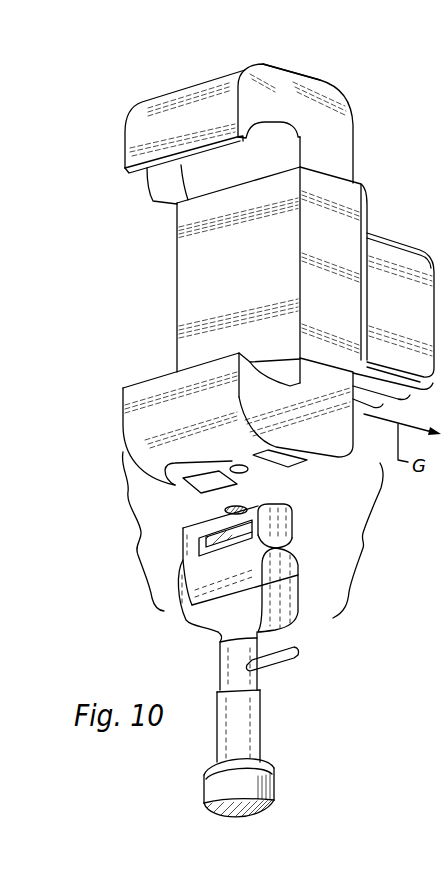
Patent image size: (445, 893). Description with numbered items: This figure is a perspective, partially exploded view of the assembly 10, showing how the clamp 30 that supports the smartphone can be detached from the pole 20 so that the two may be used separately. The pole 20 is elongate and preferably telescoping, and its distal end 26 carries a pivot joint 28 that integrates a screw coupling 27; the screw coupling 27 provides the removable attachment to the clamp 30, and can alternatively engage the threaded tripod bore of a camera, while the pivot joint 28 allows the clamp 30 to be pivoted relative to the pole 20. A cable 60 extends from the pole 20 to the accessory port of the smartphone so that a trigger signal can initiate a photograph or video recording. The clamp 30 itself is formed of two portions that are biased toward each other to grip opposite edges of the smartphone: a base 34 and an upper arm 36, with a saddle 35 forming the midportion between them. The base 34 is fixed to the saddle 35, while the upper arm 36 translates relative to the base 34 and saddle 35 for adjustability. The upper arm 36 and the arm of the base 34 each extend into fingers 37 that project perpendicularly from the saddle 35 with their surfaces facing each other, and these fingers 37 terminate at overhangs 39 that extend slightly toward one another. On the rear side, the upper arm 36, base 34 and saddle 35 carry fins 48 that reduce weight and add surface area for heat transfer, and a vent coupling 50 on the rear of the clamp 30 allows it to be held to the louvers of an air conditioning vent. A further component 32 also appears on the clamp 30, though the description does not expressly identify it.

The assembly 10 is at (302, 714).
The pole 20 is at (220, 795).
The distal end 26 is at (231, 664).
The screw coupling 27 is at (250, 503).
The pivot joint 28 is at (299, 563).
The clamp 30 is at (384, 152).
The bottom flange 32 is at (172, 482).
The base 34 is at (321, 413).
The saddle 35 is at (242, 279).
The upper arm 36 is at (323, 125).
The fingers 37 is at (280, 94).
The overhangs 39 is at (152, 198).
The fins 48 is at (192, 492).
The vent coupling 50 is at (397, 253).
The cable 60 is at (286, 664).